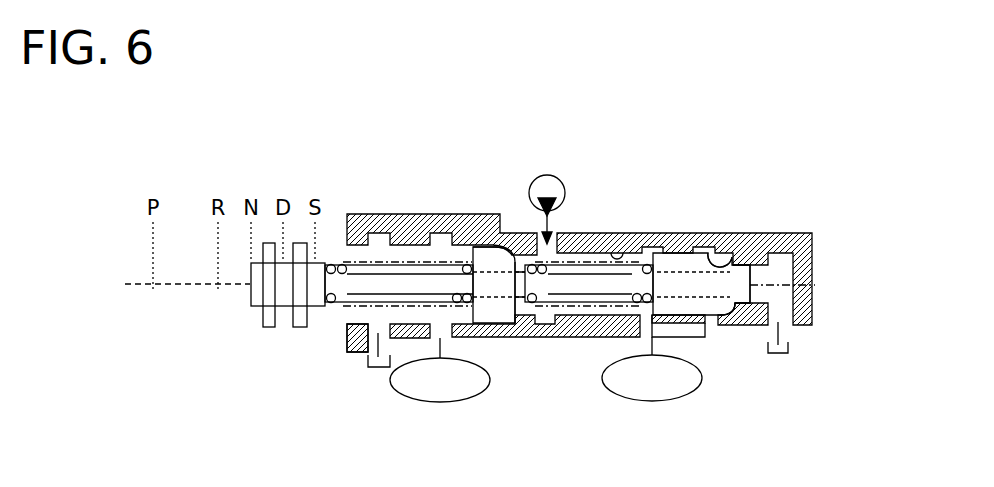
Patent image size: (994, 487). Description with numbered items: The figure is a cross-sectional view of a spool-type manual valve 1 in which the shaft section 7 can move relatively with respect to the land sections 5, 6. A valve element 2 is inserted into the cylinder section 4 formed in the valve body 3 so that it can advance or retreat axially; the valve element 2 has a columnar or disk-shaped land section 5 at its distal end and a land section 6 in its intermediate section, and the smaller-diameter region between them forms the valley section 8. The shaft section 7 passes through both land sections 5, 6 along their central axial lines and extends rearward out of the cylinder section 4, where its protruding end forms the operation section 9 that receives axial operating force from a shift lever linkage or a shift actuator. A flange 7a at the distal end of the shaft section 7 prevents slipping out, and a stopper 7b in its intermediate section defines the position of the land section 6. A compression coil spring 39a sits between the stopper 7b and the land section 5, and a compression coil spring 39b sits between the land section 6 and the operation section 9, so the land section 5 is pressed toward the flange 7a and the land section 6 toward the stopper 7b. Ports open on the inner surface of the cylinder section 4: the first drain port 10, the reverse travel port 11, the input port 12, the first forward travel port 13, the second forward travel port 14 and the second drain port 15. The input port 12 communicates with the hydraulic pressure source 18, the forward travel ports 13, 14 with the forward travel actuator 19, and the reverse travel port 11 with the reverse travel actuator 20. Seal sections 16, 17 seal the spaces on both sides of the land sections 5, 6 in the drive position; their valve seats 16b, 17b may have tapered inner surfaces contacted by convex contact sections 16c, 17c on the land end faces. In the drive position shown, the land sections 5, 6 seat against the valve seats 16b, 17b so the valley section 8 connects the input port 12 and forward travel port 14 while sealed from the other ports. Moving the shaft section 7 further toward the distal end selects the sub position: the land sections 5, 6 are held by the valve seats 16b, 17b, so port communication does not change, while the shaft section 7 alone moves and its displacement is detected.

The manual valve 1 is at (350, 190).
The valve element 2 is at (238, 305).
The valve body 3 is at (390, 213).
The cylinder section 4 is at (623, 250).
The land section 5 is at (678, 232).
The land section 6 is at (492, 310).
The shaft section 7 is at (410, 283).
The flange 7a is at (762, 232).
The stopper 7b is at (484, 220).
The valley section 8 is at (581, 262).
The operation section 9 is at (292, 320).
The first drain port 10 is at (370, 333).
The reverse travel port 11 is at (433, 337).
The input port 12 is at (540, 240).
The first forward travel port 13 is at (647, 323).
The second forward travel port 14 is at (707, 325).
The second drain port 15 is at (782, 309).
The seal section 16 is at (739, 232).
The valve seat 16b is at (704, 232).
The contact section 16c is at (737, 323).
The seal section 17 is at (511, 325).
The valve seat 17b is at (484, 220).
The contact section 17c is at (512, 323).
The hydraulic pressure source 18 is at (549, 175).
The forward travel actuator 19 is at (652, 401).
The reverse travel actuator 20 is at (440, 402).
The compression coil spring 39a is at (632, 298).
The compression coil spring 39b is at (328, 305).